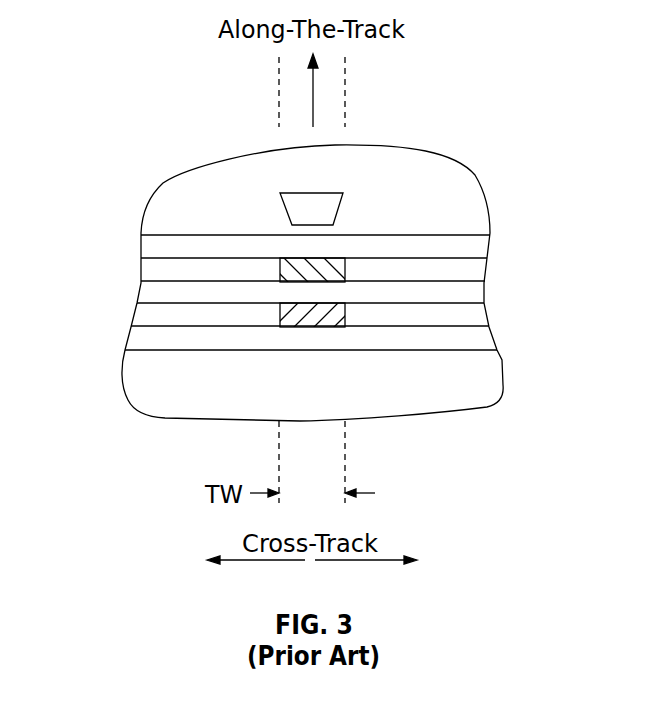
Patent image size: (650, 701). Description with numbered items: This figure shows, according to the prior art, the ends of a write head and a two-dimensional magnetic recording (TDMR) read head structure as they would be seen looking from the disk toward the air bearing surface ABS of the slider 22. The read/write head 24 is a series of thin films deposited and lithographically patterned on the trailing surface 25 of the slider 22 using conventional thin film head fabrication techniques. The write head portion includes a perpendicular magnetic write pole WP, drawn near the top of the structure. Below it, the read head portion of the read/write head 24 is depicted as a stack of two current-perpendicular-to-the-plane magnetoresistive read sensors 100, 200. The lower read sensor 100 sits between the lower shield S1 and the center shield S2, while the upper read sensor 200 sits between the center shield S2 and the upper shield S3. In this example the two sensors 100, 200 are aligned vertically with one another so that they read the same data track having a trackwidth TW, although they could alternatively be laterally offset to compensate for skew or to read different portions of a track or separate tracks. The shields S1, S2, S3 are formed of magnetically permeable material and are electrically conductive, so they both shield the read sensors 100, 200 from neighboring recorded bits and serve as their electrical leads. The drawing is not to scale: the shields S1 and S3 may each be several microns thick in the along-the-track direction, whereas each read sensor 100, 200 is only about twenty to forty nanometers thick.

The slider 22 is at (155, 408).
The read/write head 24 is at (291, 295).
The trailing surface 25 is at (163, 349).
The lower read sensor 100 is at (332, 318).
The upper read sensor 200 is at (293, 263).
The air bearing surface ABS is at (198, 178).
The write pole WP is at (341, 212).
The lower shield S1 is at (338, 353).
The center shield S2 is at (477, 293).
The upper shield S3 is at (475, 243).